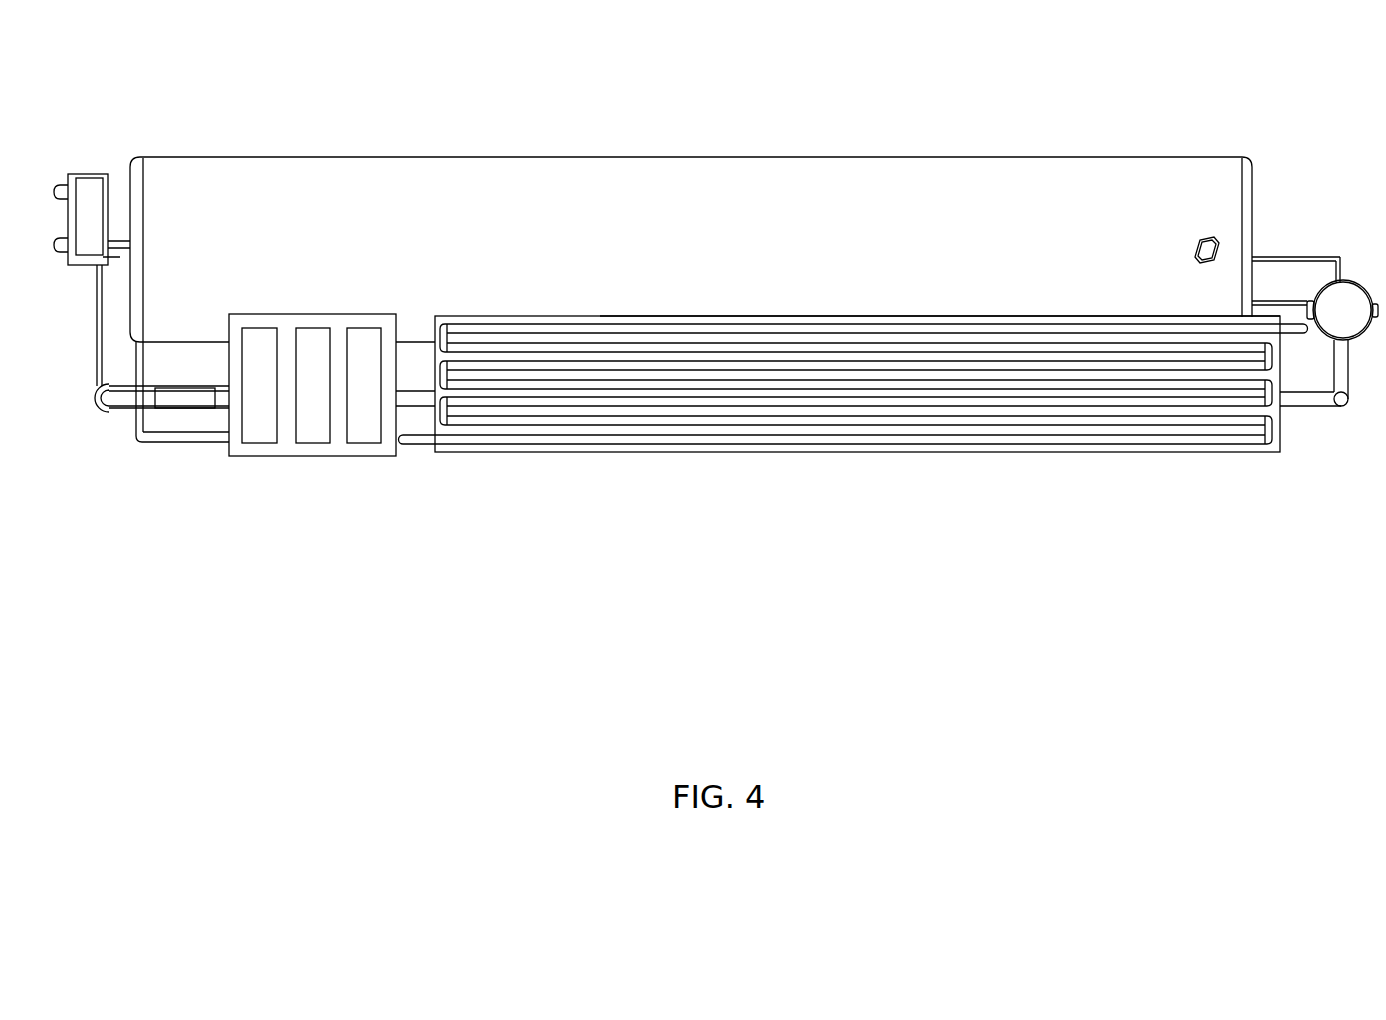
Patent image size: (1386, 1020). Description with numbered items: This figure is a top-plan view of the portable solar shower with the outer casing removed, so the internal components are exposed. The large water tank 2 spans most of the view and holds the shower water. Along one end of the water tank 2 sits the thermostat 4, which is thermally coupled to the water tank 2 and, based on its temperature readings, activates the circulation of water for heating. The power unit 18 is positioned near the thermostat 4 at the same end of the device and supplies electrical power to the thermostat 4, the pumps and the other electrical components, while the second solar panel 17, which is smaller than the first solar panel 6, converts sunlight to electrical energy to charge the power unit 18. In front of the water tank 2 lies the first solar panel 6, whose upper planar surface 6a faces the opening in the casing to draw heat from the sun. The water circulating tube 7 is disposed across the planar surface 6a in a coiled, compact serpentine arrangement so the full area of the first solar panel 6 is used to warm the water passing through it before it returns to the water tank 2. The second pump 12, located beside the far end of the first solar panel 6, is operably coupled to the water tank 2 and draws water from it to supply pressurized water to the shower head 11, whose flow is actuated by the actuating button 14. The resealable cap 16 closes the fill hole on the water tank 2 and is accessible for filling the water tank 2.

The water tank 2 is at (838, 166).
The thermostat 4 is at (95, 190).
The first solar panel 6 is at (470, 454).
The planar surface 6a is at (1008, 323).
The water circulating tube 7 is at (555, 368).
The shower head 11 is at (108, 413).
The second pump 12 is at (1352, 300).
The actuating button 14 is at (188, 409).
The resealable cap 16 is at (1205, 238).
The second solar panel 17 is at (318, 336).
The power unit 18 is at (78, 258).